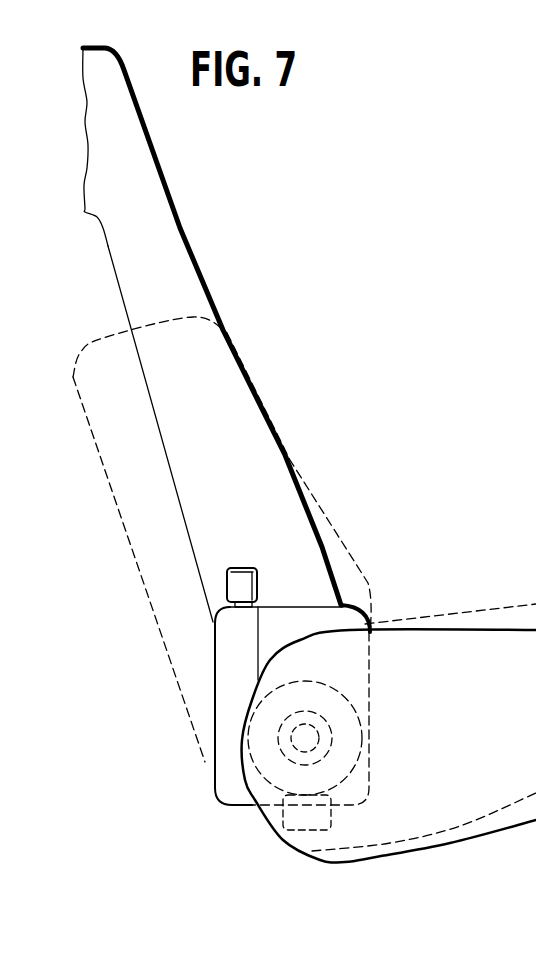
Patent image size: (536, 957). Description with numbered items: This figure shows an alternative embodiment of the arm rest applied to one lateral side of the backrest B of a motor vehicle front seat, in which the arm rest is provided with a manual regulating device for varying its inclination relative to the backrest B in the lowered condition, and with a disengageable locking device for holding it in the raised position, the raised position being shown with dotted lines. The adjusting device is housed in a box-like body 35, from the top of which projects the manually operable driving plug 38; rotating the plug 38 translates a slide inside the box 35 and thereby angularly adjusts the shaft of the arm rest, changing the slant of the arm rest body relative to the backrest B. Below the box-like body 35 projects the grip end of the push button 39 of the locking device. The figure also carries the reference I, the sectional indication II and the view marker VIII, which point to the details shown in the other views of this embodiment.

The backrest B is at (195, 288).
The seat back in reclined position I is at (348, 547).
The manually operable driving plug 38 is at (242, 583).
The housing (section view direction) VIII is at (248, 807).
The box-like body 35 is at (320, 622).
The pivot shaft II is at (323, 733).
The push button 39 is at (290, 843).